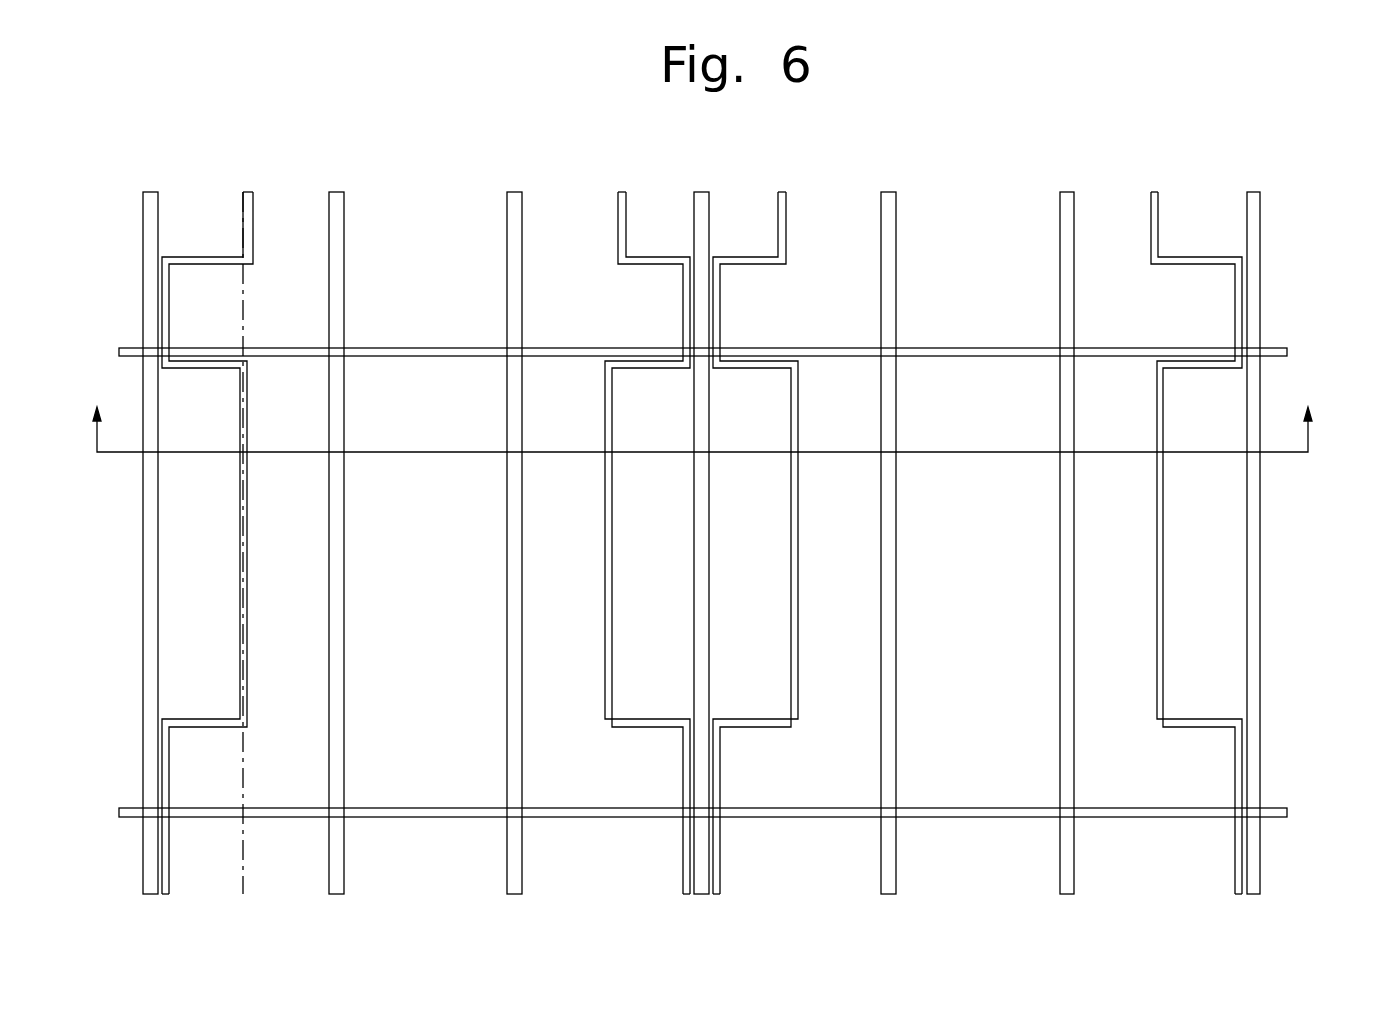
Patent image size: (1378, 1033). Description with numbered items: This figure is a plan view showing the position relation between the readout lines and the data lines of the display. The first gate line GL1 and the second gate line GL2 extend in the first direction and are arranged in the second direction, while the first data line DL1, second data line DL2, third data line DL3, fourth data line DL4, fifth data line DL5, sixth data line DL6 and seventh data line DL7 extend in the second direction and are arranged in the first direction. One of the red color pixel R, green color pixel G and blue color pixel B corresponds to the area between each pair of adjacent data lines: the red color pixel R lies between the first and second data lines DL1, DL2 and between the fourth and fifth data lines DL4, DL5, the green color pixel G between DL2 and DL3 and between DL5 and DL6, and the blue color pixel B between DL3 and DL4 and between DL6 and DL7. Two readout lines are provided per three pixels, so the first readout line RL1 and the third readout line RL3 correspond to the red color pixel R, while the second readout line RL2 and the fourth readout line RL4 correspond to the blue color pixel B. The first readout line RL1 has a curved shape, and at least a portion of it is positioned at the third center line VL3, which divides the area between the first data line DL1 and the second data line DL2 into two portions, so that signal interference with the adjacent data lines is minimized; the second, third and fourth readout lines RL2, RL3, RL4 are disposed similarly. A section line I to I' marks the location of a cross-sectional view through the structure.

The first data line DL1 is at (151, 198).
The second data line DL2 is at (337, 198).
The third data line DL3 is at (515, 198).
The fourth data line DL4 is at (702, 198).
The fifth data line DL5 is at (889, 198).
The sixth data line DL6 is at (1067, 198).
The seventh data line DL7 is at (1253, 198).
The first readout line RL1 is at (249, 198).
The second readout line RL2 is at (622, 198).
The third readout line RL3 is at (782, 198).
The fourth readout line RL4 is at (1154, 198).
The first gate line GL1 is at (1287, 352).
The second gate line GL2 is at (1287, 812).
The third center line VL3 is at (245, 560).
The section line I is at (702, 415).
The section line I' is at (1311, 393).
The red color pixel R is at (561, 537).
The green color pixel G is at (703, 537).
The blue color pixel B is at (885, 537).